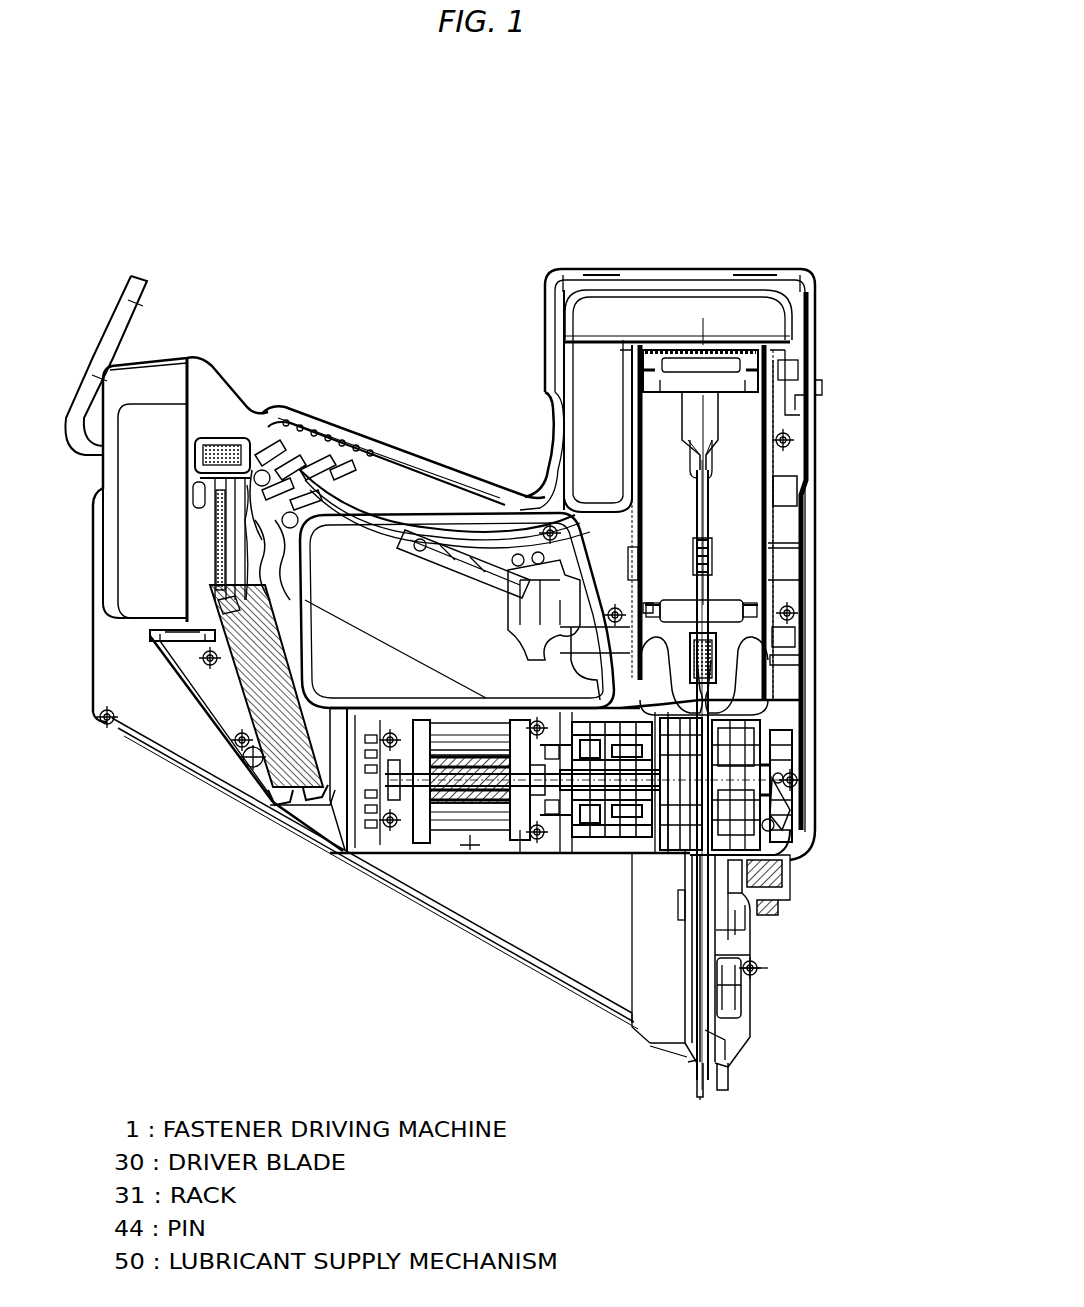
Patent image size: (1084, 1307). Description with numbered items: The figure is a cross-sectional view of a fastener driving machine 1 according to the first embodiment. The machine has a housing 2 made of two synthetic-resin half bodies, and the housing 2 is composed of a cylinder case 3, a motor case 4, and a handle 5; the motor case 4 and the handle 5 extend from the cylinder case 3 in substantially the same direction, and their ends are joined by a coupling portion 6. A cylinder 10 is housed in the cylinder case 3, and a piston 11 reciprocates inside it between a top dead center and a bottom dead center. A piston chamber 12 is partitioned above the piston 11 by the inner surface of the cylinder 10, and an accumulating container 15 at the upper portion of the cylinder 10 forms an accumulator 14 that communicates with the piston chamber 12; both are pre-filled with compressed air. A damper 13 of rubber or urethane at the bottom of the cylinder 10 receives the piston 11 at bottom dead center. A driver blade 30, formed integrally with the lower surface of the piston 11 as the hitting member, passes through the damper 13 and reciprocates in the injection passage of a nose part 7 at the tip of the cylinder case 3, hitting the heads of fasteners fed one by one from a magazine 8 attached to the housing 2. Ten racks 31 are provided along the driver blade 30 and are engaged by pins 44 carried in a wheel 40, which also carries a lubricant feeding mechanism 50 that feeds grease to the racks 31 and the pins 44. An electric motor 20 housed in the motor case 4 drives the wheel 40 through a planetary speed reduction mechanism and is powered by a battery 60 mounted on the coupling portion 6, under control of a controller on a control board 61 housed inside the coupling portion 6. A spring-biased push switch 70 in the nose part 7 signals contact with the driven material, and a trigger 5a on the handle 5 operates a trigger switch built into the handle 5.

The fastener driving machine 1 is at (769, 236).
The housing 2 is at (468, 420).
The cylinder case 3 is at (815, 410).
The motor case 4 is at (535, 856).
The handle 5 is at (348, 426).
The trigger 5a is at (524, 628).
The coupling portion 6 is at (217, 717).
The nose part 7 is at (750, 1008).
The magazine 8 is at (565, 1000).
The cylinder 10 is at (792, 458).
The piston 11 is at (795, 350).
The piston chamber 12 is at (732, 350).
The damper 13 is at (770, 665).
The accumulator 14 is at (660, 327).
The accumulating container 15 is at (580, 280).
The electric motor 20 is at (450, 858).
The driver blade 30 is at (712, 500).
The racks 31 is at (712, 550).
The wheel 40 is at (773, 895).
The pins 44 is at (790, 828).
The lubricant feeding mechanism 50 is at (795, 790).
The battery 60 is at (178, 356).
The control board 61 is at (262, 805).
The push switch 70 is at (728, 1072).